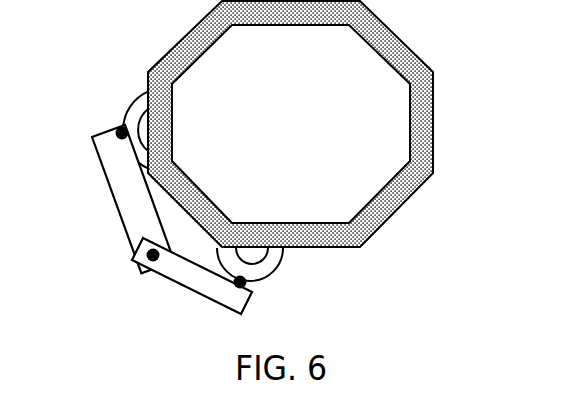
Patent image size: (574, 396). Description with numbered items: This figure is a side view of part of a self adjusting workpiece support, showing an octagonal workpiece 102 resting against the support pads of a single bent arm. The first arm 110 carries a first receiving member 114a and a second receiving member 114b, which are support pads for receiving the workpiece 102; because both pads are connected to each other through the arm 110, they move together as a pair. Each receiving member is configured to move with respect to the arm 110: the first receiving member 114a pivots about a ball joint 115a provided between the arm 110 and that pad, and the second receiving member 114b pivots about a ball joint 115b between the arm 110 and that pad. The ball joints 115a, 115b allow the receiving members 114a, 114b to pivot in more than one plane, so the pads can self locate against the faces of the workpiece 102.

The workpiece 102 is at (400, 40).
The first arm 110 is at (106, 173).
The first receiving member 114a is at (134, 102).
The second receiving member 114b is at (281, 268).
The ball joint 115a is at (118, 128).
The ball joint 115b is at (246, 286).